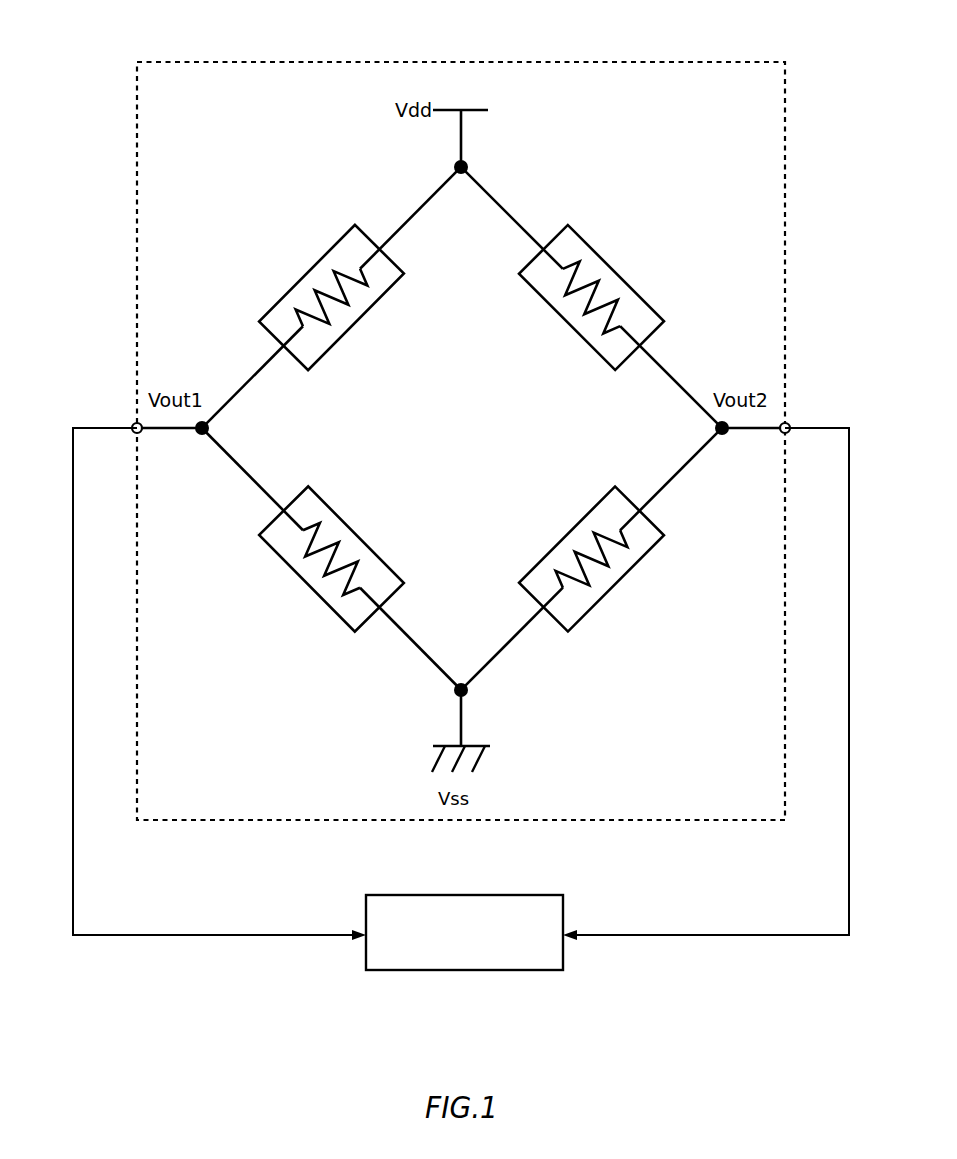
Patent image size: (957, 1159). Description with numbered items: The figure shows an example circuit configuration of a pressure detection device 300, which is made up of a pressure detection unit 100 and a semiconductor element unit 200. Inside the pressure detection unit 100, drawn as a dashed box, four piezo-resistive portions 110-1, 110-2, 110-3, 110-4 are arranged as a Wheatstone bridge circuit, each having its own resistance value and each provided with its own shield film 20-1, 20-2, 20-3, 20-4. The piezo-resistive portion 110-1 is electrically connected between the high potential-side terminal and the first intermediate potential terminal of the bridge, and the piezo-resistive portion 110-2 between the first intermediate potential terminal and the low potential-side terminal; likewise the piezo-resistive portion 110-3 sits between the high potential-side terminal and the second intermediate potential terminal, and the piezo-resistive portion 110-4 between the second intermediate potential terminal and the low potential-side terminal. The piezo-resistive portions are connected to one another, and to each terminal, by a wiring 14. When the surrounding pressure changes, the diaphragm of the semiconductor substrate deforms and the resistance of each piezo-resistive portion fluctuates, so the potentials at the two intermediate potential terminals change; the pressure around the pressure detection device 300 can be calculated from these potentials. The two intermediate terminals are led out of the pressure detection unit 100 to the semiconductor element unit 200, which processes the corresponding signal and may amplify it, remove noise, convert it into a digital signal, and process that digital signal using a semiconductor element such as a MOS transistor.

The pressure detection unit 100 is at (547, 62).
The wiring 14 is at (237, 460).
The shield film 20-1 is at (323, 255).
The shield film 20-2 is at (330, 503).
The shield film 20-3 is at (592, 238).
The shield film 20-4 is at (593, 525).
The piezo-resistive portion 110-1 is at (287, 303).
The piezo-resistive portion 110-2 is at (358, 558).
The piezo-resistive portion 110-3 is at (613, 298).
The piezo-resistive portion 110-4 is at (558, 573).
The semiconductor element unit 200 is at (545, 895).
The pressure detection device 300 is at (461, 717).